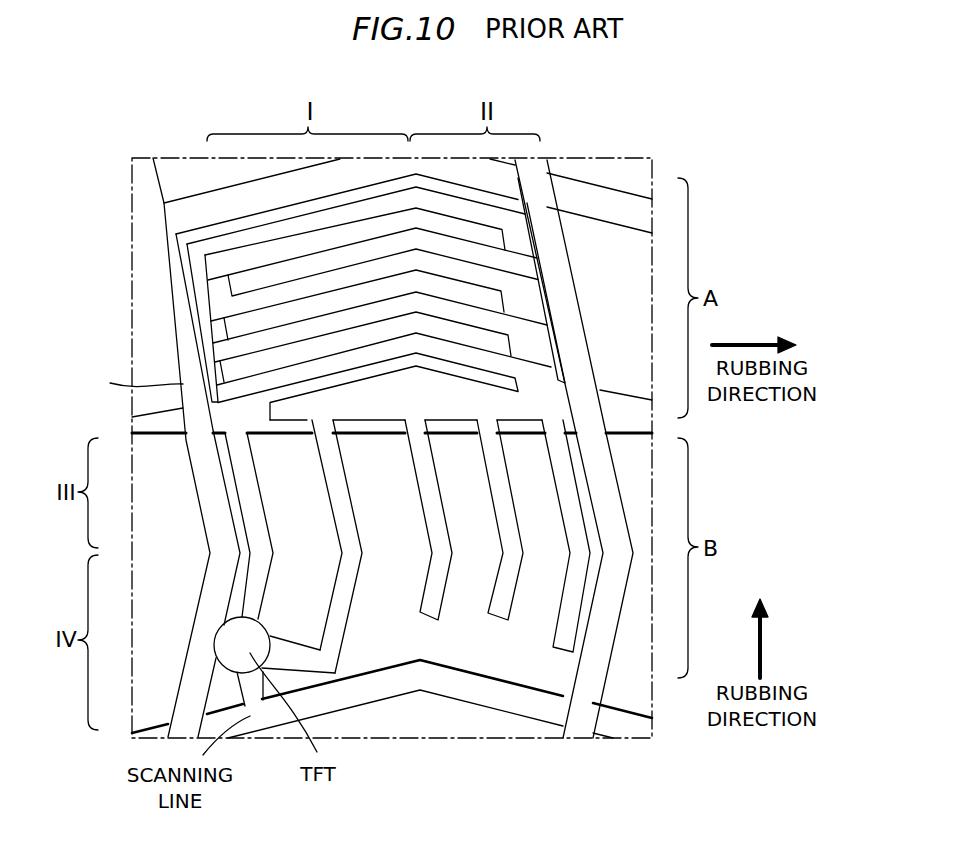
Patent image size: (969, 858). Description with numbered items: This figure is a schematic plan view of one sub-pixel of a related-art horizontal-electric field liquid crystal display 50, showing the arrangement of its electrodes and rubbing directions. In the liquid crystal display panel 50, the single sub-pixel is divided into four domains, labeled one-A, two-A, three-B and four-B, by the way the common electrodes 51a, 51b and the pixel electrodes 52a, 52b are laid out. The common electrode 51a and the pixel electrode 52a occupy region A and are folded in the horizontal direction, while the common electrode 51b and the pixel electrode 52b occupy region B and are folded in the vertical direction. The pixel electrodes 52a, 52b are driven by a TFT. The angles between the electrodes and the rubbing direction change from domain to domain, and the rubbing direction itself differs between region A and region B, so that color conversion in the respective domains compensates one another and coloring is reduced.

The horizontal-electric field liquid crystal display 50 is at (78, 105).
The common electrode 51a is at (237, 239).
The pixel electrode 52a is at (245, 275).
The common electrode 51b is at (432, 604).
The pixel electrode 52b is at (493, 617).